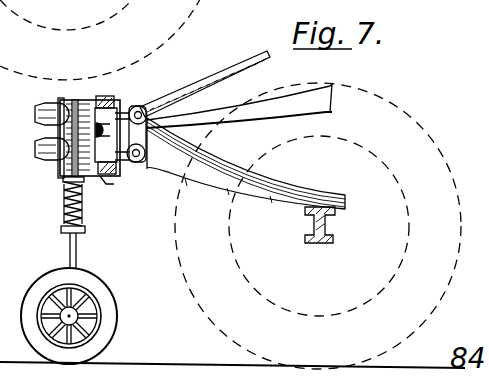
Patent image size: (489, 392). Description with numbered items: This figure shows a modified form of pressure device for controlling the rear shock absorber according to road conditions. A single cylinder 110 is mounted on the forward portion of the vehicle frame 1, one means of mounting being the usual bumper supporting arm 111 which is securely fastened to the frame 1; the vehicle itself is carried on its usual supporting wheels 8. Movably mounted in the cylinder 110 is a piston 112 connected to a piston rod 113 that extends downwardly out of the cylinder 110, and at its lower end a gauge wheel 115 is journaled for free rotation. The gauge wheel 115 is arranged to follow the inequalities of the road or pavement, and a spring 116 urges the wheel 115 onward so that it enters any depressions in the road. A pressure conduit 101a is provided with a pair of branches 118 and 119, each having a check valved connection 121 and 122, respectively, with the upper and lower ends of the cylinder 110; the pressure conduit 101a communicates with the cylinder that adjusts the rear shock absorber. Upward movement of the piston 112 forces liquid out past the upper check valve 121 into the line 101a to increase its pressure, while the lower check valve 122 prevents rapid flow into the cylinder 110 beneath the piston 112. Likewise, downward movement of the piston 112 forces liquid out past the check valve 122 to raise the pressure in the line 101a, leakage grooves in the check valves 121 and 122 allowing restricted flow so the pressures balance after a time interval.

The frame 1 is at (262, 90).
The supporting wheels 8 is at (380, 95).
The pressure conduit 101a is at (232, 63).
The cylinder 110 is at (62, 167).
The bumper supporting arm 111 is at (146, 125).
The piston 112 is at (67, 98).
The piston rod 113 is at (62, 182).
The gauge wheel 115 is at (98, 282).
The spring 116 is at (62, 212).
The branch 118 is at (150, 87).
The branch 119 is at (113, 167).
The check valve 121 is at (105, 98).
The check valve 122 is at (113, 184).